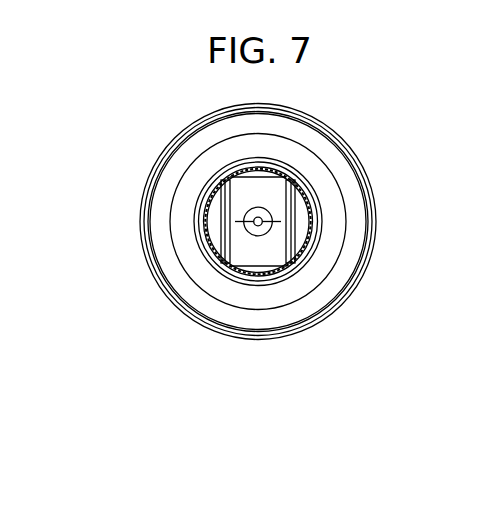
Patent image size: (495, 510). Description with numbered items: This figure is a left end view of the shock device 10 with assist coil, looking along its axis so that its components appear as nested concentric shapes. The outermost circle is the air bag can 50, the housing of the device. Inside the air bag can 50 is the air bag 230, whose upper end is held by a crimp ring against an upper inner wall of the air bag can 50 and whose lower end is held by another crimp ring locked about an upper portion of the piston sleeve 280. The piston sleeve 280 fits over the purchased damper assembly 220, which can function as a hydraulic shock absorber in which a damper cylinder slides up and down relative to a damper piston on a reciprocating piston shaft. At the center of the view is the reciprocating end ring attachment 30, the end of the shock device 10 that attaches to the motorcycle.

The shock device with assist coil 10 is at (385, 104).
The air bag can 50 is at (287, 222).
The air bag 230 is at (306, 231).
The piston sleeve 280 is at (208, 193).
The reciprocating end ring attachment 30 is at (210, 275).
The damper assembly 220 is at (340, 231).